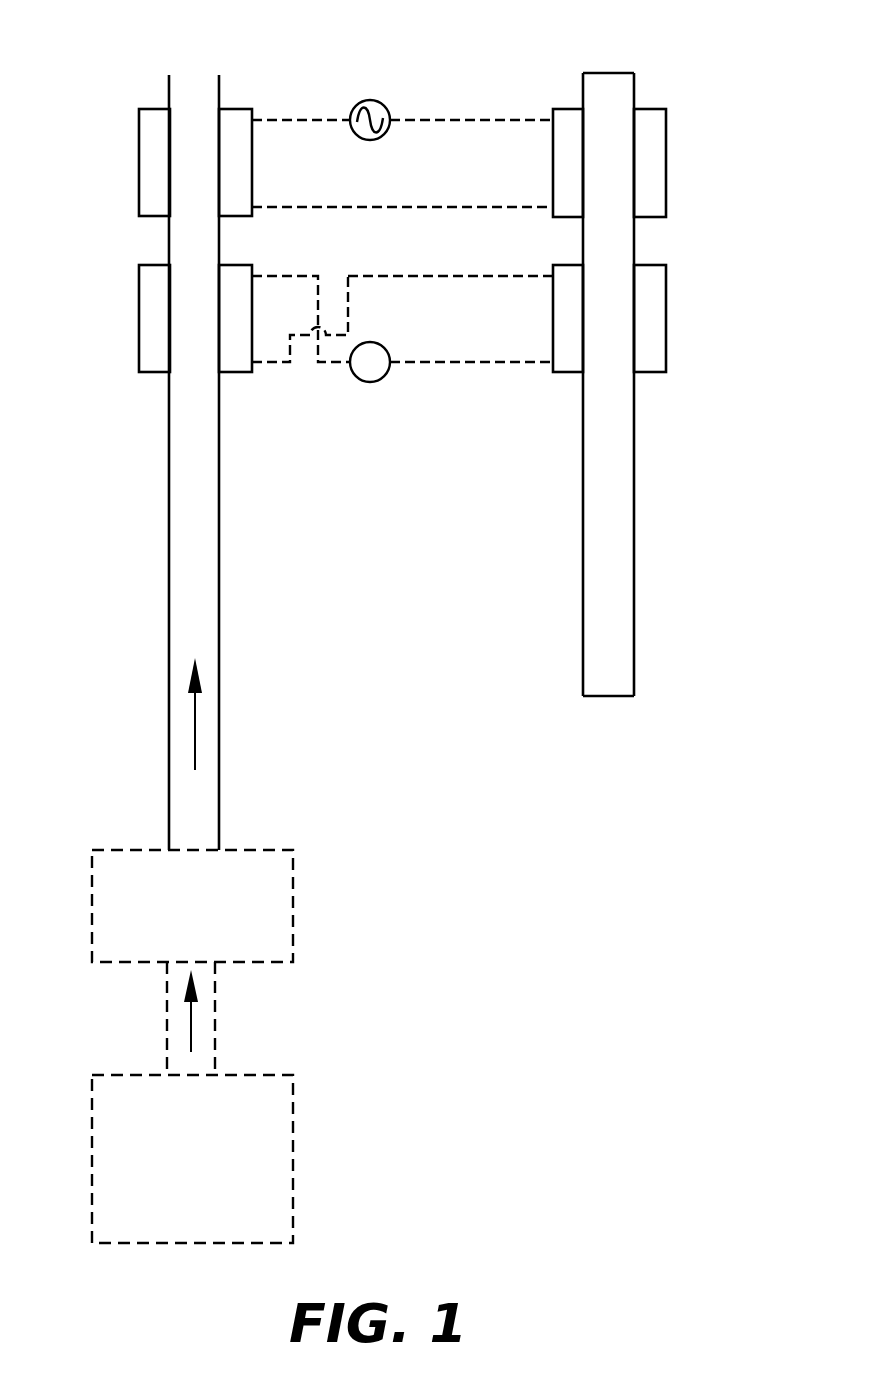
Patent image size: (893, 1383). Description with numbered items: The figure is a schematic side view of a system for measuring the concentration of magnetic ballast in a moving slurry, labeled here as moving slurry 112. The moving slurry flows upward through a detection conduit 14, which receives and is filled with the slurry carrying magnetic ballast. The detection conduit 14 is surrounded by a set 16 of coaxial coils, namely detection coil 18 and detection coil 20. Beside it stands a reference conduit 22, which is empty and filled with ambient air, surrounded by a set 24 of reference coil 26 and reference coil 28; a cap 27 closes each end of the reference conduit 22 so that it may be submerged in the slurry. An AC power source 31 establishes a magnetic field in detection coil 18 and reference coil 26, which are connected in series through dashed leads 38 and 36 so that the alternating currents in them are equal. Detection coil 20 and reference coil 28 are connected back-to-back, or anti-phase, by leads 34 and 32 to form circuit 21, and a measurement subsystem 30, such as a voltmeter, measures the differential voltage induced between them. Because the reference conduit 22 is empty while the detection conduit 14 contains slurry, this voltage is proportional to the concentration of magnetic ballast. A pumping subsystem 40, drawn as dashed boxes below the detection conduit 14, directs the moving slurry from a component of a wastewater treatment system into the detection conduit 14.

The detection conduit 14 is at (221, 543).
The set of coaxial detection coils 16 is at (143, 240).
The detection coil 18 is at (139, 152).
The detection coil 20 is at (139, 335).
The circuit 21 is at (453, 392).
The reference conduit 22 is at (635, 540).
The set of reference coils 24 is at (660, 240).
The reference coil 26 is at (667, 128).
The cap 27 is at (608, 745).
The reference coil 28 is at (667, 313).
The measurement subsystem 30 is at (370, 382).
The AC power source 31 is at (367, 100).
The lead 32 is at (452, 362).
The lead 34 is at (447, 276).
The wire 36 is at (440, 207).
The wire 38 is at (447, 120).
The pumping subsystem 40 is at (176, 953).
The moving slurry 112 is at (196, 738).